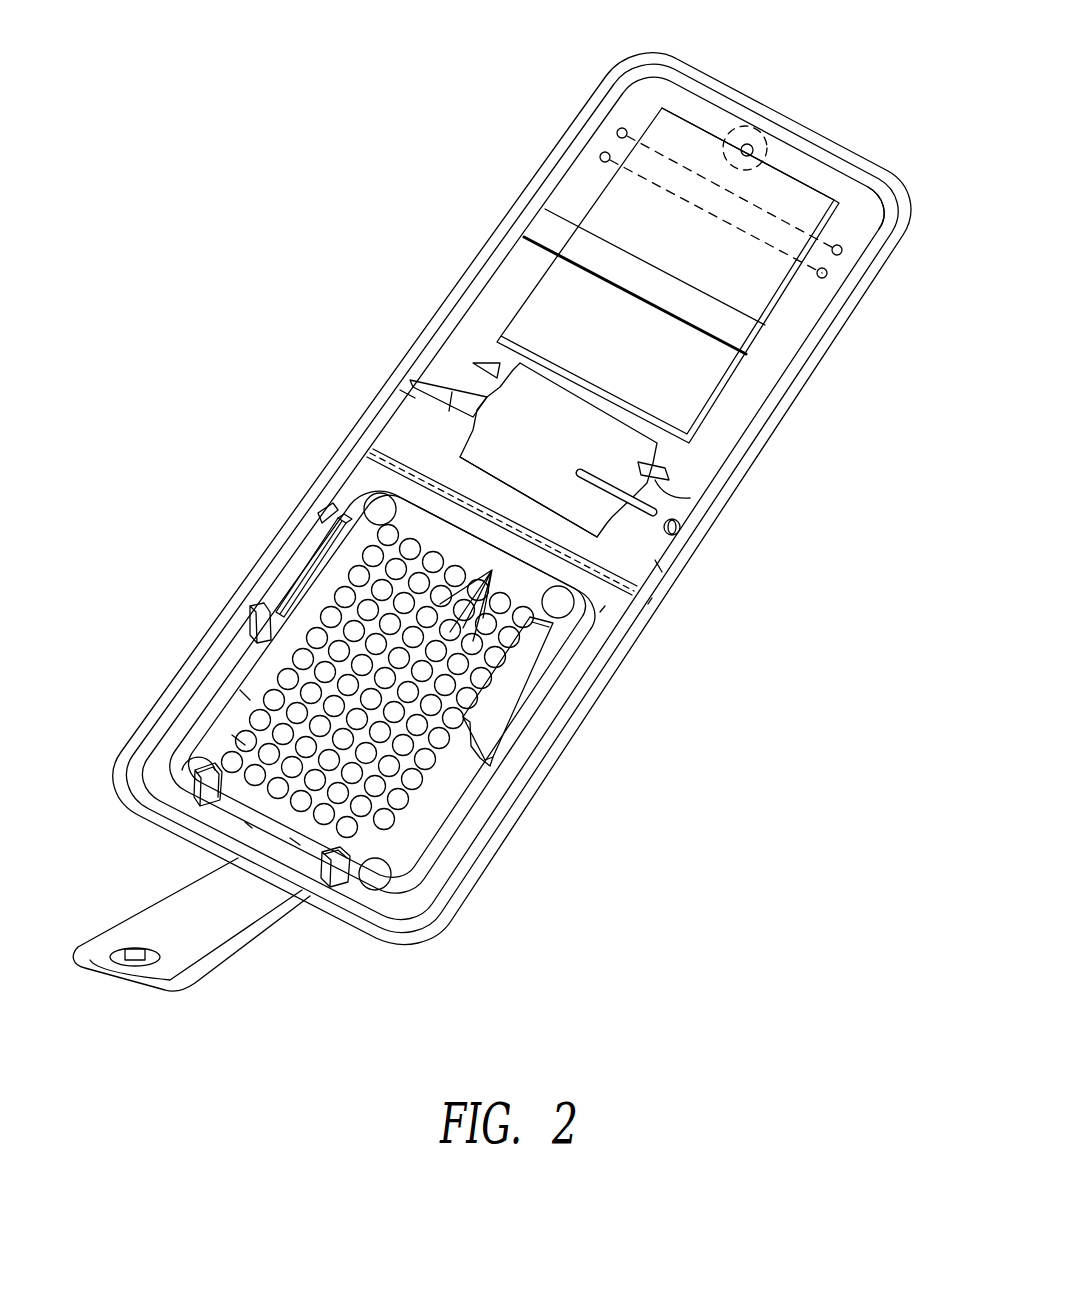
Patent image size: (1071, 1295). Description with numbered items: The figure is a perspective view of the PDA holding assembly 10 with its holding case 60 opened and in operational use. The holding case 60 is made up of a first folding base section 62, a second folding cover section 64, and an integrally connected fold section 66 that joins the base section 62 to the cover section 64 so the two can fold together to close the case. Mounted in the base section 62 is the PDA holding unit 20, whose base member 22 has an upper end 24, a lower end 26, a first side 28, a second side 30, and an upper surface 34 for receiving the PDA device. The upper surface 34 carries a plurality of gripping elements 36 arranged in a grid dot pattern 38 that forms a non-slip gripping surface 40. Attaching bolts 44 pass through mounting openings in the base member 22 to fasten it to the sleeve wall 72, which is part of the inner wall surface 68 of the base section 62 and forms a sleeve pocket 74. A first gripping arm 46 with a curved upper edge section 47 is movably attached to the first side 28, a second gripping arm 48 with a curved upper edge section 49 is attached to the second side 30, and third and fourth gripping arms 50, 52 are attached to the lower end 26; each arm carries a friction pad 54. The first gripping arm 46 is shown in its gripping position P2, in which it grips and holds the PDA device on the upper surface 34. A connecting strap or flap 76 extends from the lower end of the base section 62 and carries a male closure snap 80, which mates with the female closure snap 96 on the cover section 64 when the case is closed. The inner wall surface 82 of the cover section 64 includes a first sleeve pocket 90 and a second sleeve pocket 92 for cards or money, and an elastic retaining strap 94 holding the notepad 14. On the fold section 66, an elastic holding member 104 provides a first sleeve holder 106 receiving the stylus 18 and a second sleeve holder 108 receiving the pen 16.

The PDA holding assembly 10 is at (335, 222).
The notepad 14 is at (630, 332).
The pen 16 is at (660, 565).
The stylus 18 is at (688, 496).
The PDA holding unit 20 is at (440, 822).
The base member 22 is at (245, 822).
The upper end 24 is at (470, 545).
The lower end 26 is at (290, 838).
The first (left) side 28 is at (240, 690).
The second (right) side 30 is at (455, 782).
The upper surface 34 is at (305, 756).
The gripping elements 36 is at (479, 597).
The grid dot pattern 38 is at (282, 592).
The non-slip gripping surface 40 is at (232, 735).
The attaching bolts 44 is at (383, 500).
The first gripping arm 46 is at (283, 572).
The curved upper edge section 47 is at (300, 566).
The second gripping arm 48 is at (548, 715).
The curved upper edge section 49 is at (523, 672).
The third gripping arm 50 is at (198, 780).
The fourth gripping arm 52 is at (333, 870).
The friction pad 54 is at (330, 512).
The holding case 60 is at (732, 476).
The first folding base section 62 is at (510, 805).
The second folding cover section 64 is at (838, 302).
The fold section 66 is at (400, 396).
The inner wall surface 68 is at (440, 430).
The sleeve wall 72 is at (600, 612).
The sleeve pocket 74 is at (648, 604).
The connecting strap or flap 76 is at (200, 943).
The male closure snap 80 is at (135, 950).
The inner wall surface 82 is at (793, 145).
The first sleeve pocket 90 is at (832, 230).
The second sleeve pocket 92 is at (605, 150).
The elastic retaining strap 94 is at (628, 268).
The female closure snap 96 is at (740, 125).
The elastic holding member 104 is at (607, 433).
The first sleeve holder 106 is at (520, 362).
The second sleeve holder 108 is at (490, 405).
The gripping position P2 is at (240, 628).